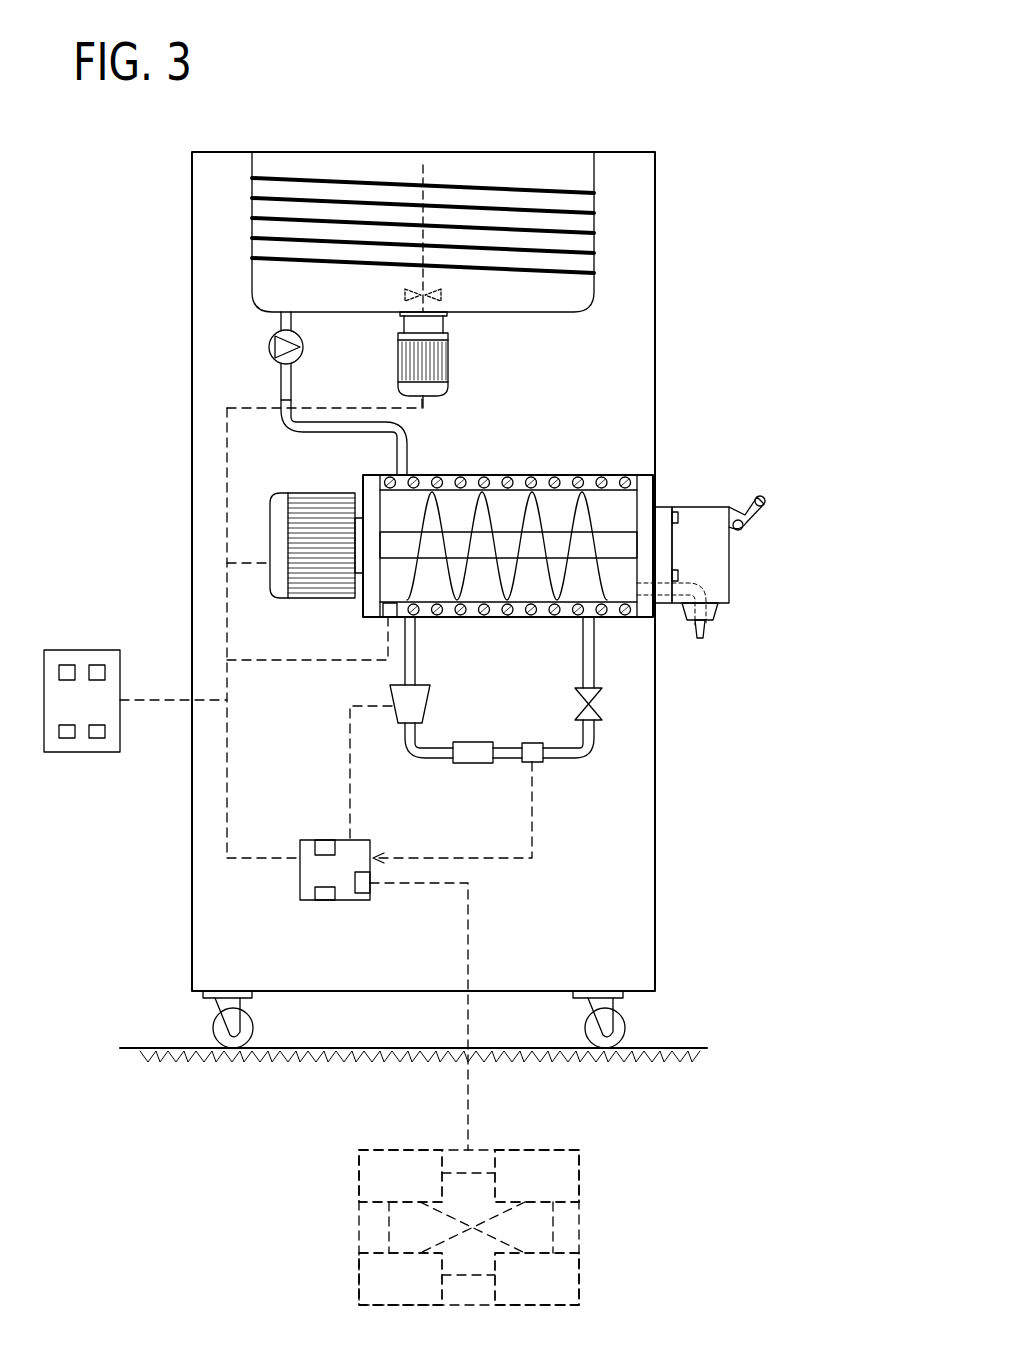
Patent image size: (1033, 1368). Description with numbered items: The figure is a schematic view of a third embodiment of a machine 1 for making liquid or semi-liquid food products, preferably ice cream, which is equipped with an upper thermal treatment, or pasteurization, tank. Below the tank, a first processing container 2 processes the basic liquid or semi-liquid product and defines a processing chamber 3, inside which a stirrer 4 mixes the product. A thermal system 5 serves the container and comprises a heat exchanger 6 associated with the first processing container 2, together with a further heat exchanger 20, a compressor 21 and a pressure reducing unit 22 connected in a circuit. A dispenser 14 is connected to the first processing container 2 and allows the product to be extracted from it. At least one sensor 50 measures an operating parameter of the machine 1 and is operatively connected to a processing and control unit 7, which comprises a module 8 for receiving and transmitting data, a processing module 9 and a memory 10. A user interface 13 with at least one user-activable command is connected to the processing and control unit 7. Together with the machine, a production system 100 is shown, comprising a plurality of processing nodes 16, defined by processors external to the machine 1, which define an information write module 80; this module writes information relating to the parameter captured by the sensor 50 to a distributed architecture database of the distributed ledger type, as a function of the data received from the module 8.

The machine 1 is at (705, 148).
The first processing container 2 is at (455, 475).
The processing chamber 3 is at (557, 515).
The stirrer 4 is at (612, 543).
The thermal system 5 is at (545, 765).
The heat exchanger 6 is at (497, 620).
The processing and control unit 7 is at (320, 871).
The module for receiving and transmitting data 8 is at (372, 893).
The processing module 9 is at (325, 838).
The memory 10 is at (325, 901).
The user interface 13 is at (86, 647).
The dispenser 14 is at (731, 536).
The processing nodes 16 is at (528, 1291).
The further heat exchanger 20 is at (472, 764).
The compressor 21 is at (393, 690).
The pressure reducing unit 22 is at (600, 725).
The sensor 50 is at (377, 619).
The write module 80 is at (572, 1291).
The production system 100 is at (552, 1227).